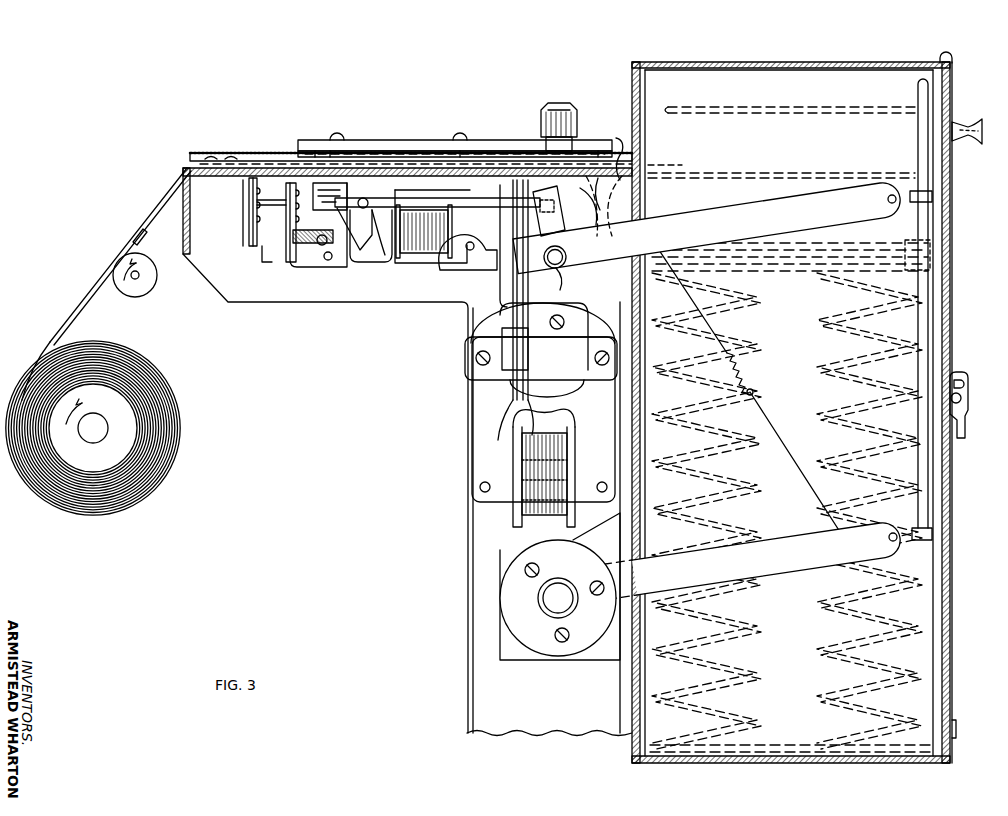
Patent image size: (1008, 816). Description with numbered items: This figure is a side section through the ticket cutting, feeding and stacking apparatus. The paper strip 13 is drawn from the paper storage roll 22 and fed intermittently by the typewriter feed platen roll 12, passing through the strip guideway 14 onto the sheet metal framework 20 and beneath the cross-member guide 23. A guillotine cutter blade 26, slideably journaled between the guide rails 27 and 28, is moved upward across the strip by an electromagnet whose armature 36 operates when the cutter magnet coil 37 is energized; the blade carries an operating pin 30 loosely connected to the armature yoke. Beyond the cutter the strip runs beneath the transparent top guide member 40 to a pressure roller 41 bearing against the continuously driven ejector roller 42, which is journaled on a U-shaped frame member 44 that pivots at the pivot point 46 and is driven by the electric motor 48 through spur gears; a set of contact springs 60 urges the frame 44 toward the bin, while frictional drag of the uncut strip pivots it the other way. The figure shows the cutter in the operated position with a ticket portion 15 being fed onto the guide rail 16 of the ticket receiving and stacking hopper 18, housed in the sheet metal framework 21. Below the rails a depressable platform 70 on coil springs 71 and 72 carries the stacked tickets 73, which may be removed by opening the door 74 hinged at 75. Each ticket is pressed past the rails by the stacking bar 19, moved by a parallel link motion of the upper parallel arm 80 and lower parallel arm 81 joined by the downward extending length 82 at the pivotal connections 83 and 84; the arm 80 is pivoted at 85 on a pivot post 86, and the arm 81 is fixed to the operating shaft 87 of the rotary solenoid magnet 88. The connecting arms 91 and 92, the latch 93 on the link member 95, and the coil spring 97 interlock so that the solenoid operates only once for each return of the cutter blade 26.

The typewriter feed platen roll 12 is at (152, 285).
The paper strip 13 is at (68, 318).
The strip guideway 14 is at (150, 232).
The ticket portion 15 is at (662, 164).
The guide rail 16 is at (760, 172).
The ticket receiving and stacking hopper 18 is at (930, 560).
The stacking bar 19 is at (802, 108).
The framework 20 is at (290, 300).
The sheet metal framework 21 is at (632, 745).
The paper storage roll 22 is at (120, 428).
The cross-member guide 23 is at (230, 160).
The guillotine cutter blade 26 is at (249, 217).
The guide rail 27 is at (263, 250).
The guide rail 28 is at (249, 240).
The operating pin 30 is at (278, 222).
The armature 36 is at (405, 265).
The cutter magnet coil 37 is at (450, 268).
The transparent top guide member 40 is at (405, 147).
The pressure roller 41 is at (558, 148).
The ejector roller 42 is at (608, 165).
The U-shaped frame member 44 is at (580, 290).
The pivot point 46 is at (560, 330).
The electric motor 48 is at (468, 432).
The contact springs 60 is at (510, 295).
The depressable platform 70 is at (772, 273).
The coil spring 71 is at (845, 333).
The coil spring 72 is at (748, 348).
The stacked tickets 73 is at (900, 241).
The door 74 is at (953, 185).
The hinge 75 is at (970, 397).
The upper parallel arm 80 is at (712, 222).
The lower parallel arm 81 is at (748, 575).
The downward extending length 82 is at (928, 342).
The pivotal connection 83 is at (888, 200).
The pivotal connection 84 is at (889, 538).
The pivotal connection 85 is at (551, 284).
The pivot post 86 is at (566, 254).
The operating shaft 87 is at (540, 598).
The rotary solenoid magnet 88 is at (525, 556).
The connecting arm 91 is at (572, 212).
The connecting arm 92 is at (378, 262).
The latch 93 is at (348, 205).
The link member 95 is at (300, 267).
The coil spring 97 is at (320, 213).